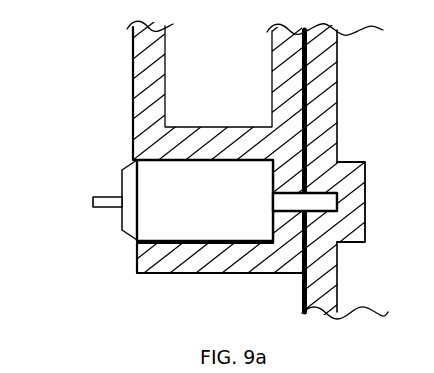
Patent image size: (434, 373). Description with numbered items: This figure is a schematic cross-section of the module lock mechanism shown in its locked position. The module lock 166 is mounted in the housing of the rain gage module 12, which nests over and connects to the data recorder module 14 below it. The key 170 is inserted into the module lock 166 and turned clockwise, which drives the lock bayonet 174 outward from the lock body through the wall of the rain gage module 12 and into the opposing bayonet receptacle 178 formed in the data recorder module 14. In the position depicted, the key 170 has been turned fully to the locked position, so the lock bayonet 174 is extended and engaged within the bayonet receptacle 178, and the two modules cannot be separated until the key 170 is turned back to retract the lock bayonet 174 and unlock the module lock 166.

The rain gage module 12 is at (230, 91).
The data recorder module 14 is at (337, 171).
The module lock 166 is at (228, 208).
The key 170 is at (93, 198).
The lock bayonet 174 is at (323, 202).
The bayonet receptacle 178 is at (353, 230).